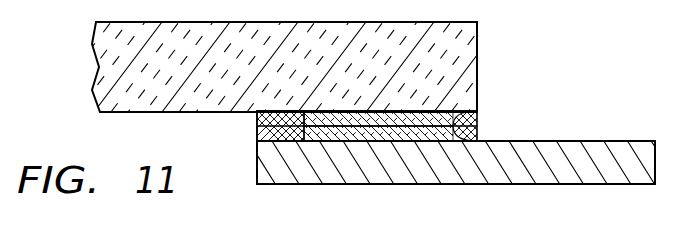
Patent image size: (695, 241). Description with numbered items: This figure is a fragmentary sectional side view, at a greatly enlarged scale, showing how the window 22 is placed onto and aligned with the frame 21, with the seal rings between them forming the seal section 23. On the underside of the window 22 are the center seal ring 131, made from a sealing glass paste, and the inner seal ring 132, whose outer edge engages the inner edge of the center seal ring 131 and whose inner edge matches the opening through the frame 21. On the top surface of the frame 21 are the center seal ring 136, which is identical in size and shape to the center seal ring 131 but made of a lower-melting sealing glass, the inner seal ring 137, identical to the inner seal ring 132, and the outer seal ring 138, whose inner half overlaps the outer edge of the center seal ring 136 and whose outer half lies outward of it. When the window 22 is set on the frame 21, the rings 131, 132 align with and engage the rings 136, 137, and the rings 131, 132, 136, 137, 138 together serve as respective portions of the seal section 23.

The window 22 is at (102, 71).
The frame 21 is at (325, 180).
The seal section 23 is at (488, 99).
The center seal ring 131 is at (454, 110).
The inner seal ring 132 is at (257, 117).
The center seal ring 136 is at (401, 138).
The inner seal ring 137 is at (263, 139).
The outer seal ring 138 is at (477, 116).